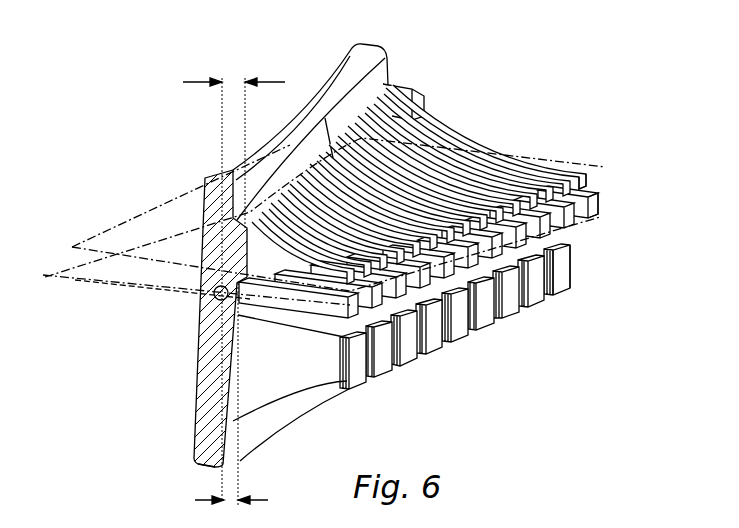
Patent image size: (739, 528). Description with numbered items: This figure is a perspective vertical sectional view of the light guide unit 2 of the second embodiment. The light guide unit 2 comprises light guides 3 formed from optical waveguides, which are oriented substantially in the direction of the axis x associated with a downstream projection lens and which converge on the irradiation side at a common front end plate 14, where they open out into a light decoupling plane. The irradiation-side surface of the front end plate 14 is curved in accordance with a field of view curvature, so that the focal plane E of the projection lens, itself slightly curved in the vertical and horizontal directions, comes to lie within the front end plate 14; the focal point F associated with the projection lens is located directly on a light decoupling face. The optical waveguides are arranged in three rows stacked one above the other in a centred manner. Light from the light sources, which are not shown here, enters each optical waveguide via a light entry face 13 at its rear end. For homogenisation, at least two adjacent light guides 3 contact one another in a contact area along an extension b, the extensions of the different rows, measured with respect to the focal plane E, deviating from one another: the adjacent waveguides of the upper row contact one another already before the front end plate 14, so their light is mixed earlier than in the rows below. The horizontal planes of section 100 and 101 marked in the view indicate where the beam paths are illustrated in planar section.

The light guide unit 2 is at (199, 121).
The light guides 3 is at (285, 263).
The light entry face 13 is at (589, 168).
The front end plate 14 is at (207, 363).
The plane of section 100 is at (121, 226).
The plane of section 101 is at (195, 228).
The axis x is at (61, 275).
The focal point F is at (216, 292).
The focal plane E is at (201, 434).
The extension b is at (234, 278).